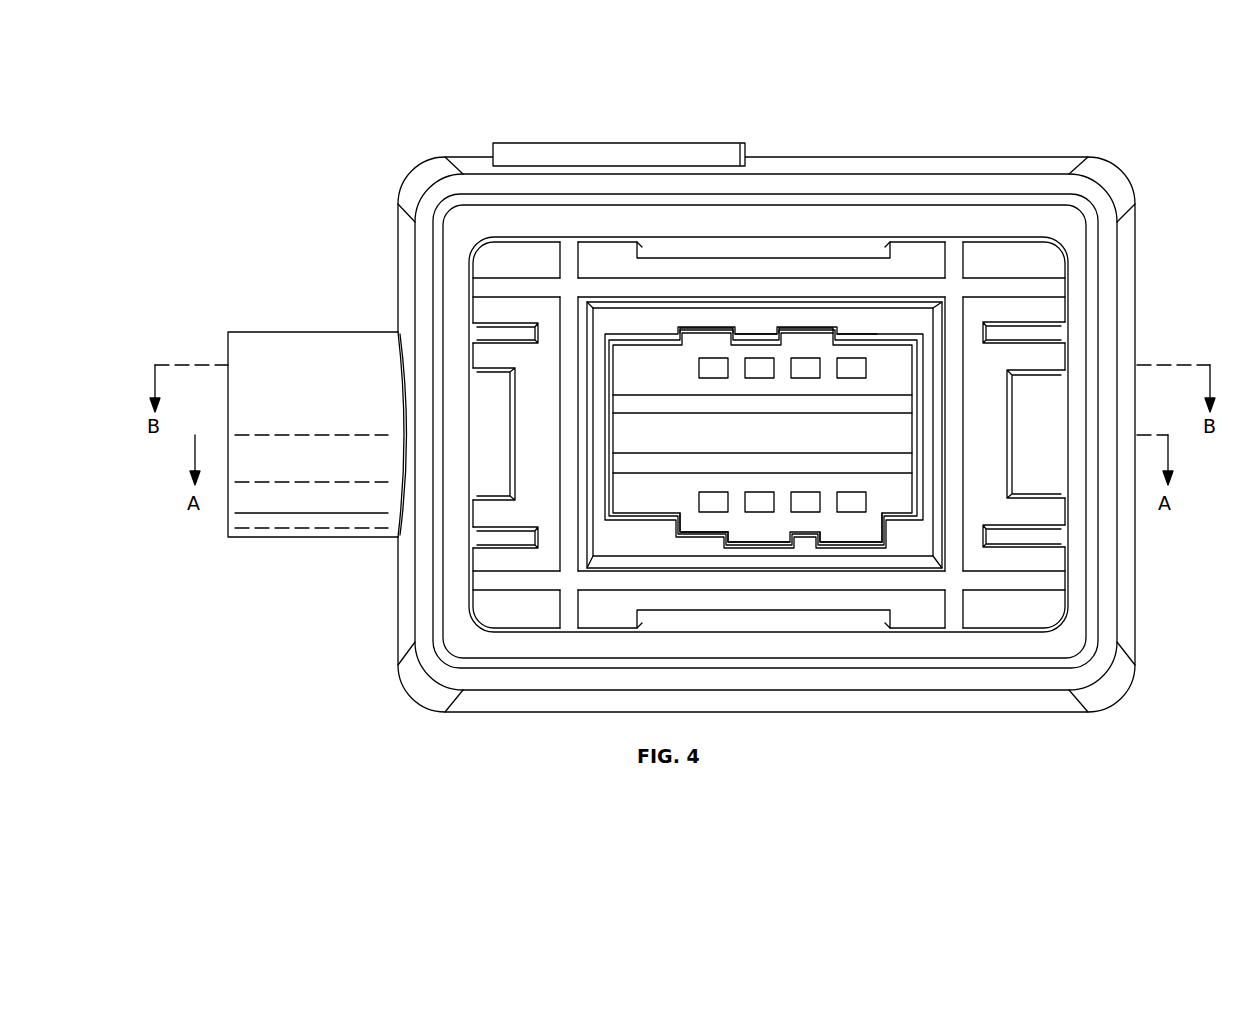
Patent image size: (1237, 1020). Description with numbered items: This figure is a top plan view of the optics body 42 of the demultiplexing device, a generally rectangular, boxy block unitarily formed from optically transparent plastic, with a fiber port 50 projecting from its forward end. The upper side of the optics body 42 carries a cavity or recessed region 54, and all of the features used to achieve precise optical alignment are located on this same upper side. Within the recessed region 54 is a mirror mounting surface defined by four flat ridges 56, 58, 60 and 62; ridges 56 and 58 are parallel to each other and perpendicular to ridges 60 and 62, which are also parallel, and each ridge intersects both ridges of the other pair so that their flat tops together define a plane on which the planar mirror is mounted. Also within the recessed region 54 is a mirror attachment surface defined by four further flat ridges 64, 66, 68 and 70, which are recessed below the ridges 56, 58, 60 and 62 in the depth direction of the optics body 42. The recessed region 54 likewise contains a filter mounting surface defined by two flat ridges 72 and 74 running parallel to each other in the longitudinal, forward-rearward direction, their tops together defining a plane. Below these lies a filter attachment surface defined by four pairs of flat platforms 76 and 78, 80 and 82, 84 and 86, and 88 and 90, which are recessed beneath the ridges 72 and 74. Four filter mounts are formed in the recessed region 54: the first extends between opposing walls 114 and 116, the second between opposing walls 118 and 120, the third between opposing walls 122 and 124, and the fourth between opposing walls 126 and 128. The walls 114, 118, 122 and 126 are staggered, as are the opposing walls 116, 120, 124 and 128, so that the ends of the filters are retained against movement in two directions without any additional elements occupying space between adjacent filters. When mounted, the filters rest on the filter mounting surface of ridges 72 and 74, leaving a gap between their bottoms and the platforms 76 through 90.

The optics body 42 is at (442, 102).
The fiber port 50 is at (272, 538).
The recessed region 54 is at (901, 389).
The flat ridge 56 is at (955, 410).
The flat ridge 58 is at (565, 436).
The flat ridge 60 is at (596, 282).
The flat ridge 62 is at (612, 580).
The flat ridge 64 is at (490, 331).
The flat ridge 66 is at (483, 537).
The flat ridge 68 is at (1045, 332).
The flat ridge 70 is at (1045, 538).
The flat ridge 72 is at (668, 395).
The flat ridge 74 is at (668, 473).
The flat platform 76 is at (713, 378).
The flat platform 78 is at (728, 492).
The flat platform 80 is at (760, 378).
The flat platform 82 is at (773, 492).
The flat platform 84 is at (806, 378).
The flat platform 86 is at (818, 492).
The flat platform 88 is at (851, 378).
The flat platform 90 is at (866, 492).
The wall 114 is at (705, 327).
The wall 116 is at (684, 530).
The wall 118 is at (748, 338).
The wall 120 is at (760, 540).
The wall 122 is at (805, 327).
The wall 124 is at (817, 540).
The wall 126 is at (855, 335).
The wall 128 is at (857, 530).